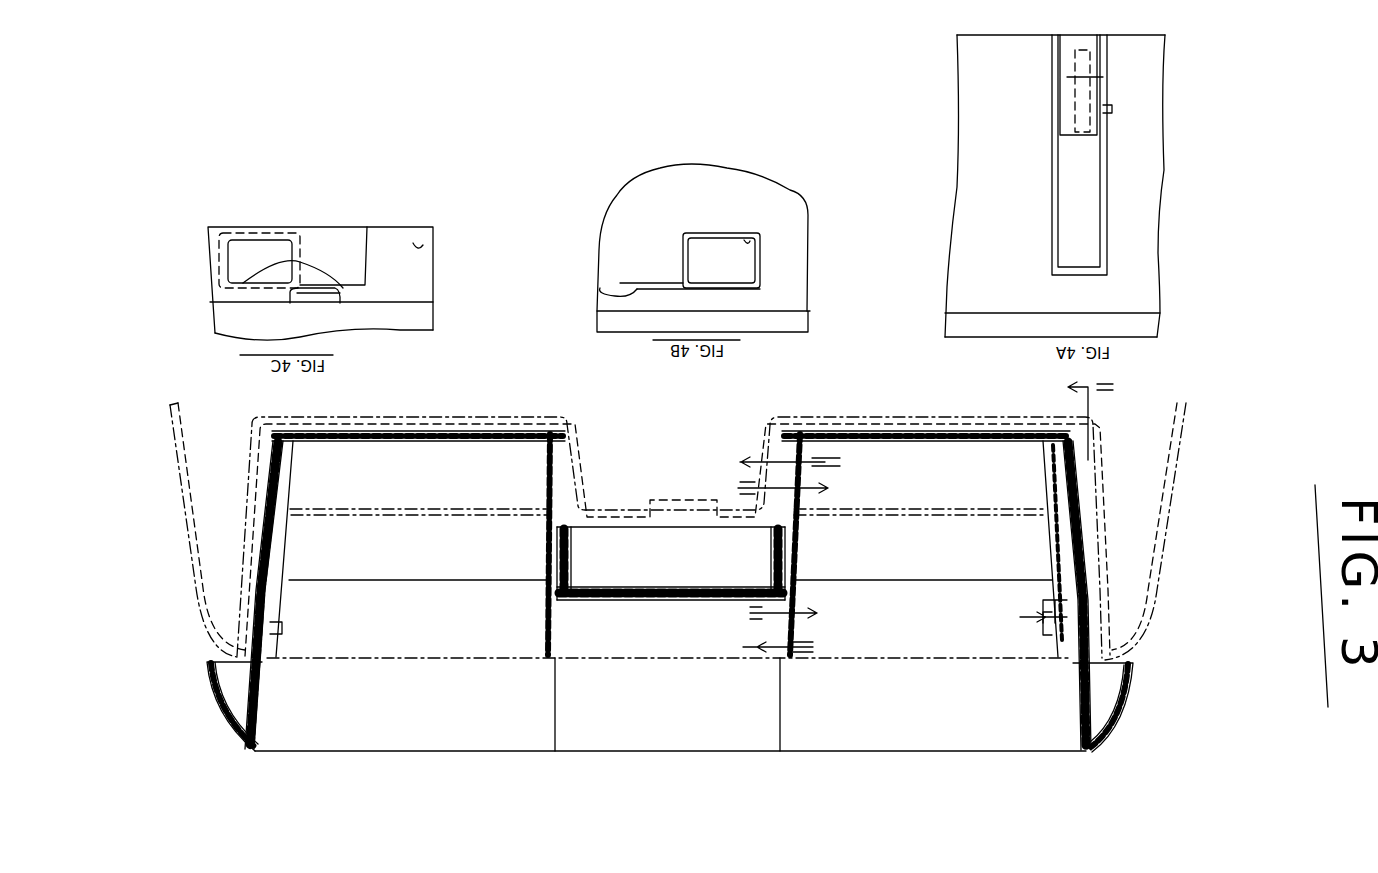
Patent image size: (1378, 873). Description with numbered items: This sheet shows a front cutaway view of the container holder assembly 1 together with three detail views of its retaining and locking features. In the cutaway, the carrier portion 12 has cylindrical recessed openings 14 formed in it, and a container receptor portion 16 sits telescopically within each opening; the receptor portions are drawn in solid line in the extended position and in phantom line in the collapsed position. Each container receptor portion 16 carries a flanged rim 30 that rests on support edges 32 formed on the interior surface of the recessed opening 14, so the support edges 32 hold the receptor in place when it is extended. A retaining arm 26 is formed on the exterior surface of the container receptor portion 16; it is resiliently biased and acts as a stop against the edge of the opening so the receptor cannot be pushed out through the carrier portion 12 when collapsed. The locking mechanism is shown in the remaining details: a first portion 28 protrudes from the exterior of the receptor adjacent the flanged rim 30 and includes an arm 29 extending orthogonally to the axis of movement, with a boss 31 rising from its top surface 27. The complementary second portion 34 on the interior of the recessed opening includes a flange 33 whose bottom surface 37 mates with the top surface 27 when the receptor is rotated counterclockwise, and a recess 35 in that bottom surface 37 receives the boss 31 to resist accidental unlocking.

In FIG. 3, the container assembly 1 is at (180, 500).
In FIG. 3, the carrier portion 12 is at (215, 705).
In FIG. 3, the recessed opening 14 is at (553, 697).
In FIG. 3, the container receptor portion 16 is at (443, 505).
In FIG. 3, the retaining arm 26 is at (270, 440).
In FIG. 4A, the retaining arm 26 is at (1112, 108).
In FIG. 4B, the top surface 27 is at (657, 290).
In FIG. 3, the first portion 28 is at (600, 510).
In FIG. 4B, the first portion 28 is at (760, 235).
In FIG. 3, the arm 29 is at (577, 560).
In FIG. 4C, the arm 29 is at (347, 280).
In FIG. 4B, the arm 29 is at (663, 280).
In FIG. 3, the flanged rim 30 is at (572, 598).
In FIG. 4B, the flanged rim 30 is at (597, 317).
In FIG. 4A, the flanged rim 30 is at (957, 338).
In FIG. 4C, the boss 31 is at (350, 285).
In FIG. 4B, the boss 31 is at (597, 292).
In FIG. 3, the support edges 32 is at (773, 560).
In FIG. 4C, the flange 33 is at (303, 294).
In FIG. 4C, the second portion 34 is at (433, 250).
In FIG. 4C, the recess 35 is at (347, 296).
In FIG. 4C, the bottom surface 37 is at (243, 283).